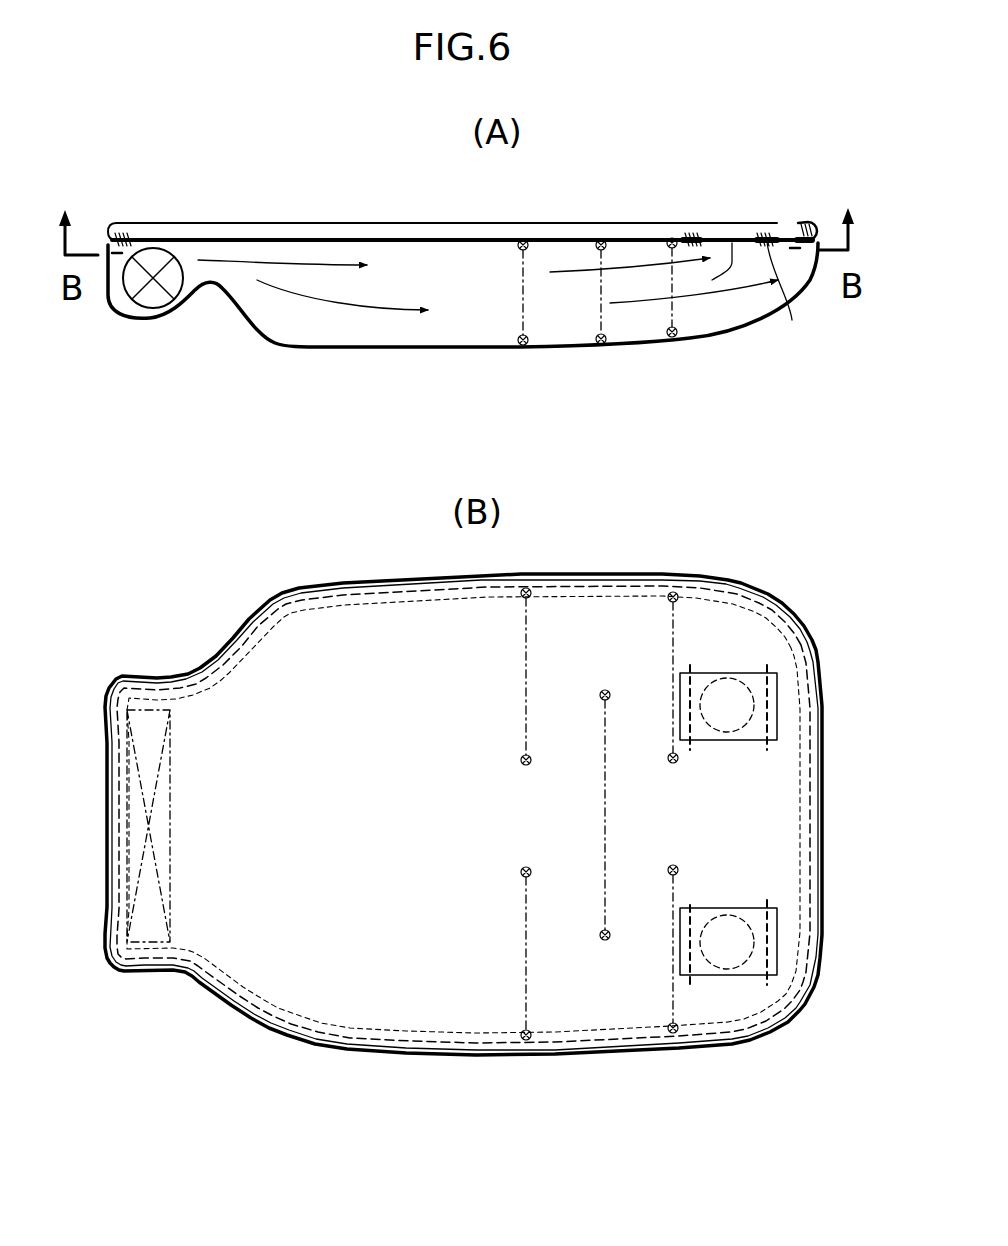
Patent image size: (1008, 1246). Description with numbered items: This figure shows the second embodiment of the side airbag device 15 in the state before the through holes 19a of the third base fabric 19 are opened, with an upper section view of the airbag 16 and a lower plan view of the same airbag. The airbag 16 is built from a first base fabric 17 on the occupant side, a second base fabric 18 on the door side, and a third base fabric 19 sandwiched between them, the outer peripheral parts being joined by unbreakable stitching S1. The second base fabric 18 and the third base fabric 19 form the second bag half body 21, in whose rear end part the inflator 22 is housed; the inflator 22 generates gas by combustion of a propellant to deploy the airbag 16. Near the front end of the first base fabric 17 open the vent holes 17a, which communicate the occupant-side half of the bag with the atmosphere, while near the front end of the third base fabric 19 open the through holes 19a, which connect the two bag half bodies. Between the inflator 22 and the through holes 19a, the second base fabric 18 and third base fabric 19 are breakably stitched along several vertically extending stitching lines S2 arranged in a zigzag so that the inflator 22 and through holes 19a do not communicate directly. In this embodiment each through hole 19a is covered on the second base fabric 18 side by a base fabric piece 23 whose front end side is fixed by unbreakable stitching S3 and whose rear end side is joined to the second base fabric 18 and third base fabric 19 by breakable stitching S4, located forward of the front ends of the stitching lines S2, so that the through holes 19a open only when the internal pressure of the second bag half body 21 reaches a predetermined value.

The side airbag device 15 is at (440, 186).
The airbag 16 is at (570, 201).
The first base fabric 17 is at (492, 219).
The vent hole 17a is at (807, 222).
The second base fabric 18 is at (495, 348).
The third base fabric 19 is at (408, 234).
The through hole 19a is at (763, 236).
The second bag half body 21 is at (396, 290).
The inflator 22 is at (150, 300).
The base fabric piece 23 is at (722, 1002).
The unbreakable stitching S1 is at (122, 234).
The stitching line S2 is at (523, 295).
The unbreakable stitching S3 is at (767, 920).
The breakable stitching S4 is at (690, 232).